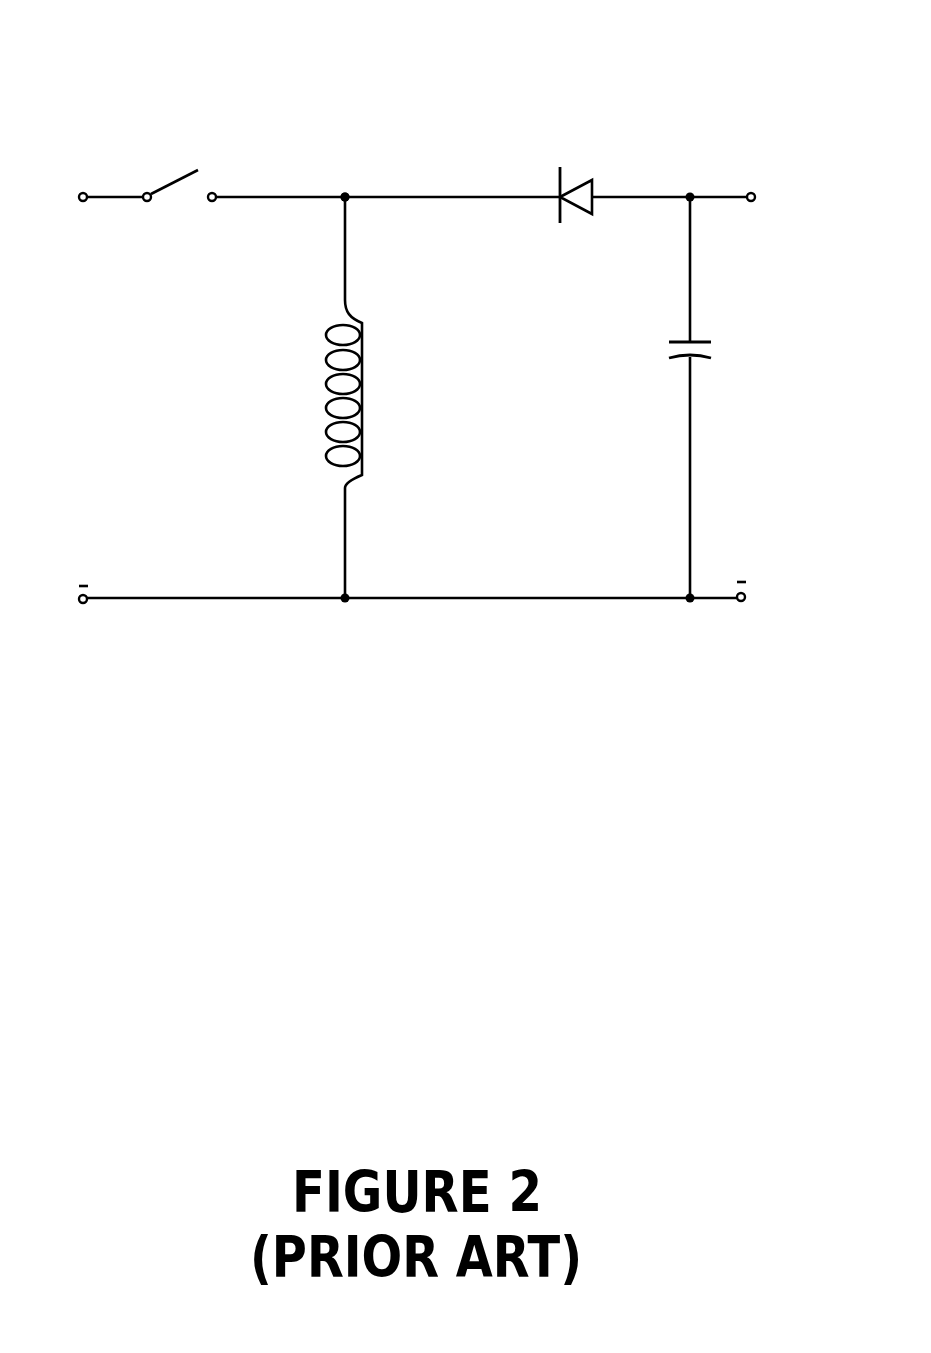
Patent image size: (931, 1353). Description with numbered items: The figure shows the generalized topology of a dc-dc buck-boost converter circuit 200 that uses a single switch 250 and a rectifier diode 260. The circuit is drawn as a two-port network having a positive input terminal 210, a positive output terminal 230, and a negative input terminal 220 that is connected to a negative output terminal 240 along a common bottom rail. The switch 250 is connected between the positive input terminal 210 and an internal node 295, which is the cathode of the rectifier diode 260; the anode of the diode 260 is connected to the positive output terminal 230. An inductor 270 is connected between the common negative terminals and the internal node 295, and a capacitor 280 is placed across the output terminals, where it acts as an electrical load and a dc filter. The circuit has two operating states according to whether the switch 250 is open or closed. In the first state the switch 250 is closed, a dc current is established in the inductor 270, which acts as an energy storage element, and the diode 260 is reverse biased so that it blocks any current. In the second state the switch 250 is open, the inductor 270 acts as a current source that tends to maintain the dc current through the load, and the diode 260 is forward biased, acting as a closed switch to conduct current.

The dc-dc buck-boost converter circuit 200 is at (86, 55).
The positive input terminal 210 is at (72, 194).
The negative input terminal 220 is at (73, 601).
The positive output terminal 230 is at (756, 193).
The negative output terminal 240 is at (748, 597).
The switch 250 is at (165, 182).
The rectifier diode 260 is at (596, 180).
The inductor 270 is at (368, 442).
The capacitor 280 is at (714, 351).
The internal node 295 is at (346, 193).